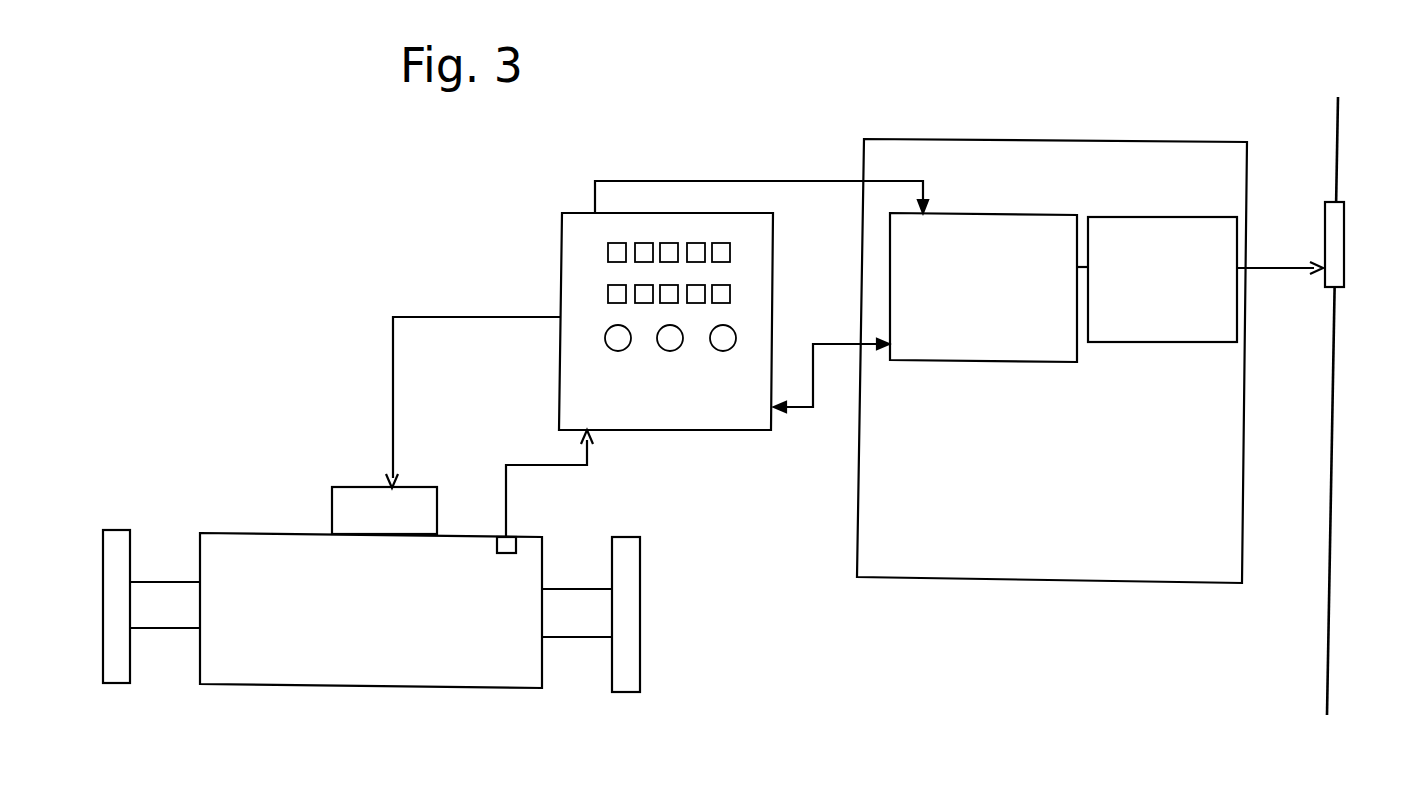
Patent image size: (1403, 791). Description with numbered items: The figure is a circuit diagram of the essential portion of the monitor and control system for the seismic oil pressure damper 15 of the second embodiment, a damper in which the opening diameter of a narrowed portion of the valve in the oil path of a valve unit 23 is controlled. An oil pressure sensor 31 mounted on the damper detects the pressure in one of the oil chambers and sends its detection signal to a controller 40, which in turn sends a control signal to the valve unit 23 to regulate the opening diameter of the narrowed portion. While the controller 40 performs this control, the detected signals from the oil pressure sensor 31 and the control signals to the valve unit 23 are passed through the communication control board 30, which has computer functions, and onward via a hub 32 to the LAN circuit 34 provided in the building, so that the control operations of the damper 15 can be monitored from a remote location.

The seismic oil pressure damper 15 is at (212, 440).
The valve unit 23 is at (343, 492).
The oil pressure sensor 31 is at (512, 548).
The controller 40 is at (562, 275).
The communication control board 30 is at (1013, 583).
The hub 32 is at (1345, 238).
The LAN circuit 34 is at (1333, 497).